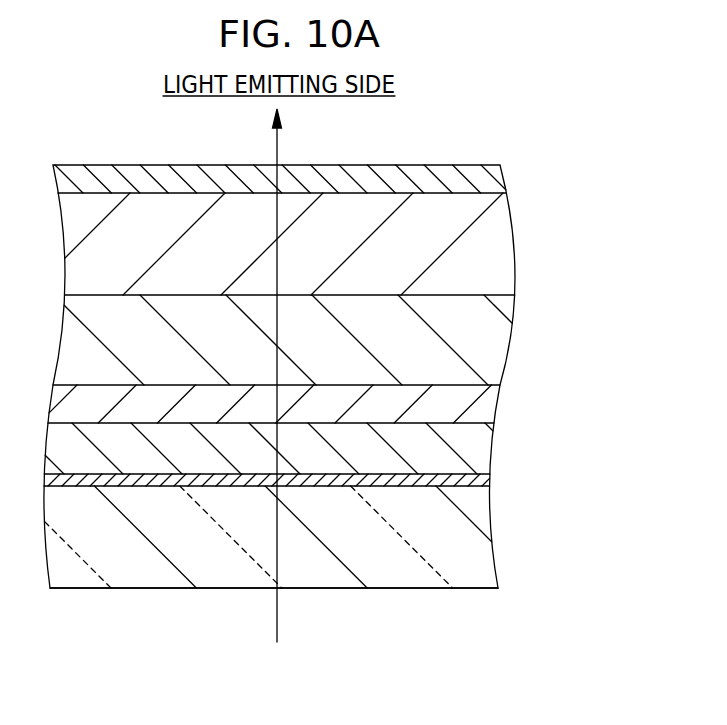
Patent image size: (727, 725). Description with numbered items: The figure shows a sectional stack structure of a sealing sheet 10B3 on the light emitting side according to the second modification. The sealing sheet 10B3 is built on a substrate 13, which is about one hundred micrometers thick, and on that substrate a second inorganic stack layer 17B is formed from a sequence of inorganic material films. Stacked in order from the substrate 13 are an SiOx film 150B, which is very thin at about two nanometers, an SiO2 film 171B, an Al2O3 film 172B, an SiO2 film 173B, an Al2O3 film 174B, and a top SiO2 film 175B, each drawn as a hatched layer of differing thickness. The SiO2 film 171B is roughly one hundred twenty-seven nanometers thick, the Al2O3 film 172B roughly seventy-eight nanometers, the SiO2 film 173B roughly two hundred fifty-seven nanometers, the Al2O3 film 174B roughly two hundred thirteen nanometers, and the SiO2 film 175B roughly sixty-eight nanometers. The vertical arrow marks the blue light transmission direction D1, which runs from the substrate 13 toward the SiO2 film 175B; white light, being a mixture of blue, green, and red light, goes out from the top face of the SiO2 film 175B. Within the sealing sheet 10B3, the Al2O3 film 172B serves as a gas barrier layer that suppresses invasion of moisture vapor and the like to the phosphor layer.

The sealing sheet 10B3 is at (509, 129).
The second inorganic stack layer 17B is at (349, 328).
The SiO2 film 175B is at (497, 179).
The Al2O3 film 174B is at (498, 249).
The SiO2 film 173B is at (498, 334).
The Al2O3 film 172B is at (492, 408).
The SiO2 film 171B is at (480, 455).
The SiOx film 150B is at (317, 483).
The substrate 13 is at (475, 535).
The blue light transmission direction D1 is at (277, 617).